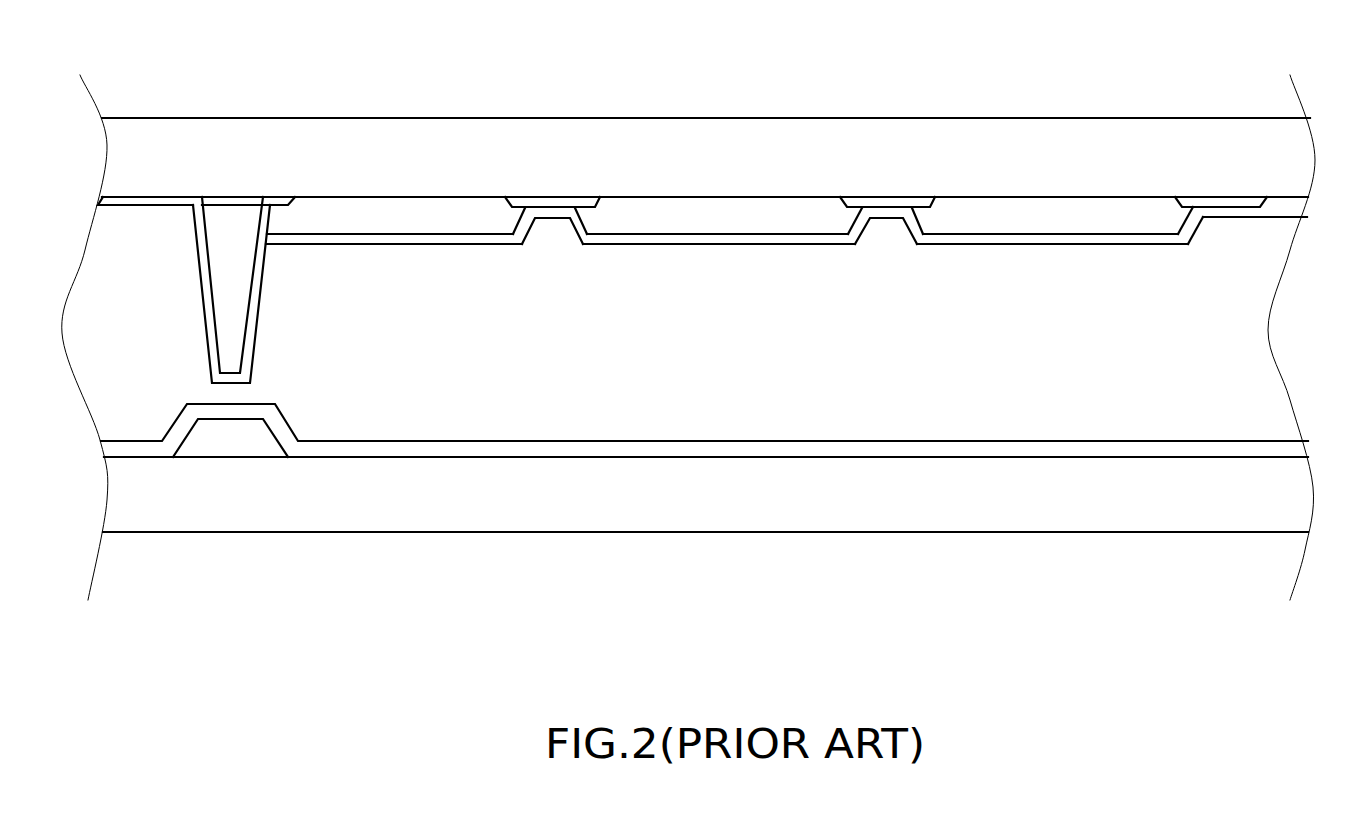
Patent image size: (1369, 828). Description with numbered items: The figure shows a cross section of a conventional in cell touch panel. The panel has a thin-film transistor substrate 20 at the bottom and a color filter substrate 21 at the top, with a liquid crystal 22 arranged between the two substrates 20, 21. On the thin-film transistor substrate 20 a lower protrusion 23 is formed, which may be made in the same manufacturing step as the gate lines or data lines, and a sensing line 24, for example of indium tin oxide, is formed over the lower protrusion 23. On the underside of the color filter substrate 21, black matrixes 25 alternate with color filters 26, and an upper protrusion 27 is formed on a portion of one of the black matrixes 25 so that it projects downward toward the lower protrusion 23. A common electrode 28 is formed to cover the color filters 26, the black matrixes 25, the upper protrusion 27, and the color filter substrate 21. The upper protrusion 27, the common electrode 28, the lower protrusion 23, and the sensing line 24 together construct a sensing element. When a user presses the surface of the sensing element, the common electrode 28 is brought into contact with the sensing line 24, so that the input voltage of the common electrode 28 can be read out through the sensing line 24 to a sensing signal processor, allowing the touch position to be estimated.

The thin-film transistor substrate 20 is at (1283, 505).
The color filter substrate 21 is at (1290, 162).
The liquid crystal 22 is at (1218, 350).
The lower protrusion 23 is at (228, 443).
The sensing line 24 is at (277, 425).
The black matrix 25 is at (272, 203).
The color filter 26 is at (398, 217).
The upper protrusion 27 is at (230, 223).
The common electrode 28 is at (163, 203).